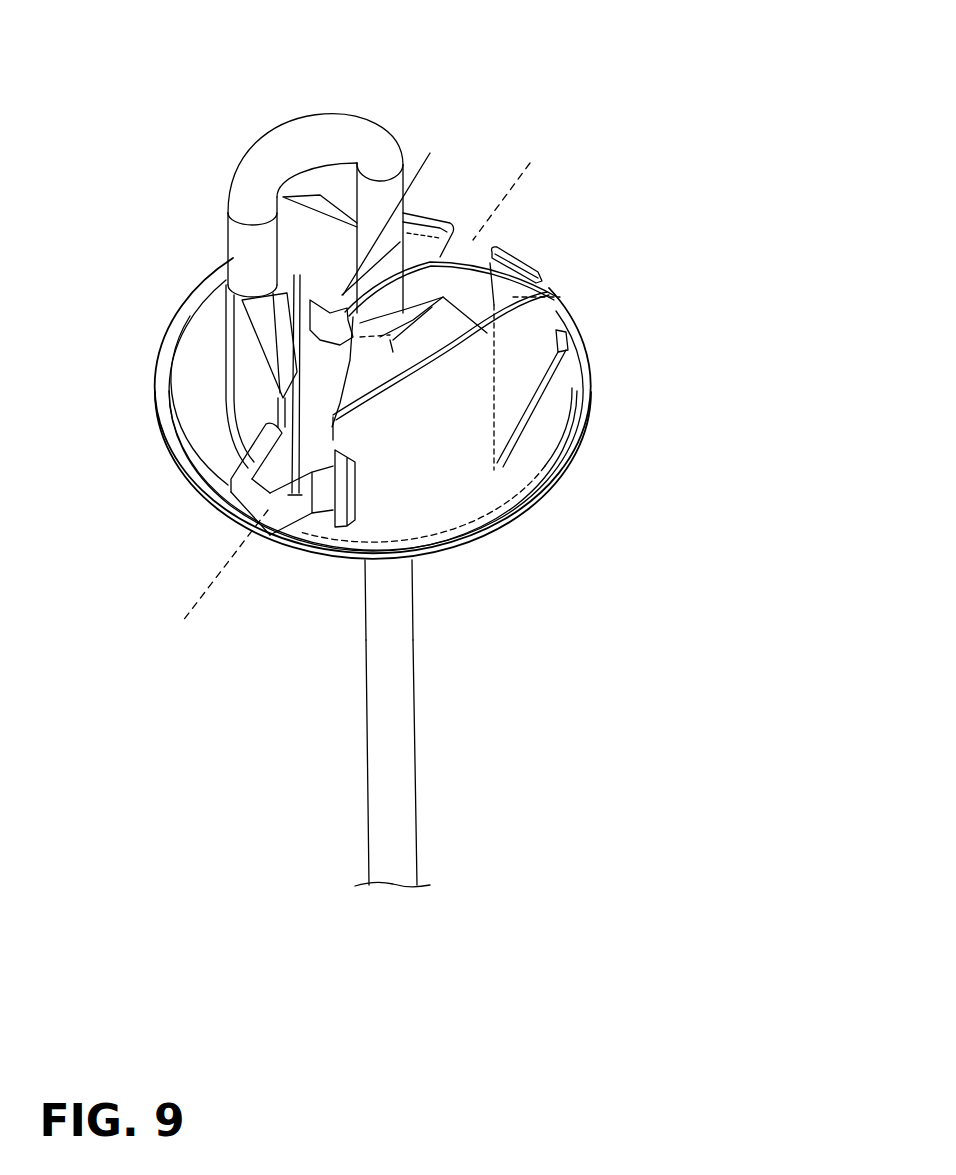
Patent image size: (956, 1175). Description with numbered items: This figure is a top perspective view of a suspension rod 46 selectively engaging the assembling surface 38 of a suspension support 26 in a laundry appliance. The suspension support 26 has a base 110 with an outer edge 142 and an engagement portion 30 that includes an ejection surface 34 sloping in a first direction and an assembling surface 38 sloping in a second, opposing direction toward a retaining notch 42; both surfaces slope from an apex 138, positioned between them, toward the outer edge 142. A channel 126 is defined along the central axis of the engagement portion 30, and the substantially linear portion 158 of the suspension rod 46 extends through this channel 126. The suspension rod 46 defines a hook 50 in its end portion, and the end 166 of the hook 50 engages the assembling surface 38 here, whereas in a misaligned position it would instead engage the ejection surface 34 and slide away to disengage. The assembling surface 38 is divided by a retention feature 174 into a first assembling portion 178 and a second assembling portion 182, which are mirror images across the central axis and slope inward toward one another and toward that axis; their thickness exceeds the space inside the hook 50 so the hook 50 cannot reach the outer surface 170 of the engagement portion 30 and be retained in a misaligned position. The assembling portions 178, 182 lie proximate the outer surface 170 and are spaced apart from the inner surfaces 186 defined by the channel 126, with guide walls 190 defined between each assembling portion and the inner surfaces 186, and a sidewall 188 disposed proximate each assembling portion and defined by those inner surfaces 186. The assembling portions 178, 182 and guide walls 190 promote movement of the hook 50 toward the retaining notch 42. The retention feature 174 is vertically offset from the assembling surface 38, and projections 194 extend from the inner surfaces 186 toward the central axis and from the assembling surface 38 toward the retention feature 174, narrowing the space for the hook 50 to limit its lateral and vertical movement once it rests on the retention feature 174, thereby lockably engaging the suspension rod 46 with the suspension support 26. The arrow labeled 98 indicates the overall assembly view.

The suspension support 26 is at (170, 338).
The engagement portion 30 is at (523, 340).
The ejection surface 34 is at (522, 262).
The assembling surface 38 is at (398, 382).
The retaining notch 42 is at (251, 481).
The suspension rod 46 is at (400, 783).
The hook 50 is at (313, 142).
The assembly 98 is at (535, 112).
The base 110 is at (530, 442).
The channel 126 is at (450, 268).
The apex 138 is at (483, 300).
The outer edge 142 is at (530, 497).
The linear portion 158 is at (390, 593).
The end 166 is at (248, 315).
The outer surface 170 is at (247, 433).
The retention feature 174 is at (320, 375).
The first assembling portion 178 is at (272, 337).
The second assembling portion 182 is at (370, 377).
The inner surfaces 186 is at (417, 253).
The sidewall 188 is at (263, 481).
The guide walls 190 is at (330, 307).
The projections 194 is at (347, 307).